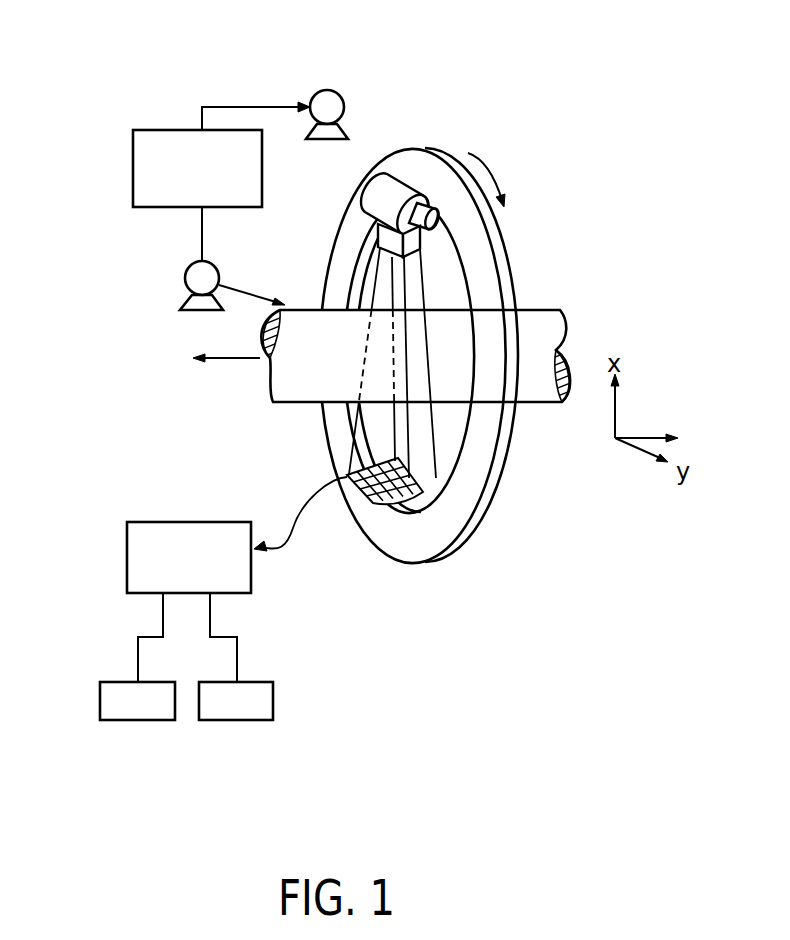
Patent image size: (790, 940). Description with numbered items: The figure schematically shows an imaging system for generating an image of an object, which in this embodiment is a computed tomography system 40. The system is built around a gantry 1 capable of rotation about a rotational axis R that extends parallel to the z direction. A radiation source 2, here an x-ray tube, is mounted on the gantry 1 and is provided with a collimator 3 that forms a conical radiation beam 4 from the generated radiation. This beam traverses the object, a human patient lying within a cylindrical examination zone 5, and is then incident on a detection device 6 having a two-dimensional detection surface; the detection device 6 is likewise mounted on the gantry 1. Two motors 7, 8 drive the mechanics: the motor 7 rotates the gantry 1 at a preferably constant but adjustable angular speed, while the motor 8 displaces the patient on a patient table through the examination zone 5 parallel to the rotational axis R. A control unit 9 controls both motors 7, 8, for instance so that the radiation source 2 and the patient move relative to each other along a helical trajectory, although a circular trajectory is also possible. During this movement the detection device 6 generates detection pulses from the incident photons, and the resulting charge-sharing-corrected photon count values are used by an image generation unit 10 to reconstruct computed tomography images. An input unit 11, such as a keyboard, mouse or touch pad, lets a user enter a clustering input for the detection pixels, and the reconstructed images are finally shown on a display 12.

The gantry 1 is at (467, 493).
The radiation source 2 is at (392, 190).
The collimator 3 is at (417, 243).
The radiation beam 4 is at (410, 448).
The examination zone 5 is at (301, 308).
The detection device 6 is at (378, 507).
The motor 7 is at (337, 90).
The motor 8 is at (218, 268).
The control unit 9 is at (150, 130).
The image generation unit 10 is at (127, 557).
The input unit 11 is at (141, 722).
The display 12 is at (242, 722).
The computed tomography system 40 is at (596, 149).
The rotational axis R is at (238, 360).